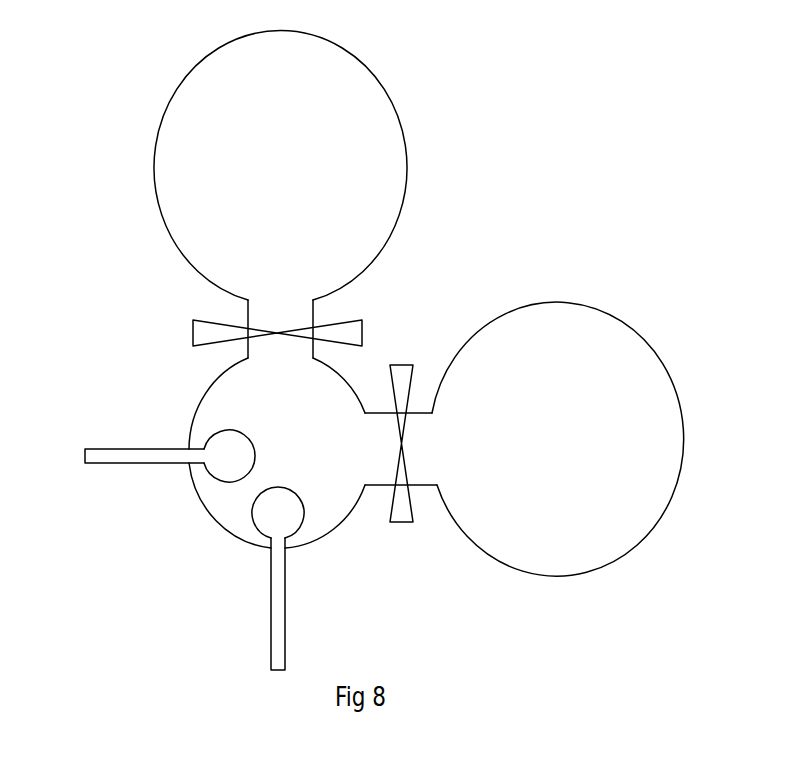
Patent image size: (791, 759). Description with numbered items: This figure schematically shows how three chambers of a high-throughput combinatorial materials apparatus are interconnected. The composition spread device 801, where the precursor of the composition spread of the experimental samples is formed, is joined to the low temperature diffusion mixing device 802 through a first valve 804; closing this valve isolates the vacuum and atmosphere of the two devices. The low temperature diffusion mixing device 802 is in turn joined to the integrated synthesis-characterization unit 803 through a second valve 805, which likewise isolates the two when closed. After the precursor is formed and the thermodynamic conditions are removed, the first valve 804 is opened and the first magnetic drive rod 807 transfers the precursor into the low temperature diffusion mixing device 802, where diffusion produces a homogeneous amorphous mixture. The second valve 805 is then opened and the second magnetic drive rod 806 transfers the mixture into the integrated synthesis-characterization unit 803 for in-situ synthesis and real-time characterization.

The composition spread device 801 is at (225, 165).
The low temperature diffusion mixing device 802 is at (296, 495).
The integrated synthesis-characterization unit 803 is at (558, 392).
The first valve 804 is at (199, 303).
The second valve 805 is at (432, 385).
The second magnetic drive rod 806 is at (146, 417).
The first magnetic drive rod 807 is at (234, 578).